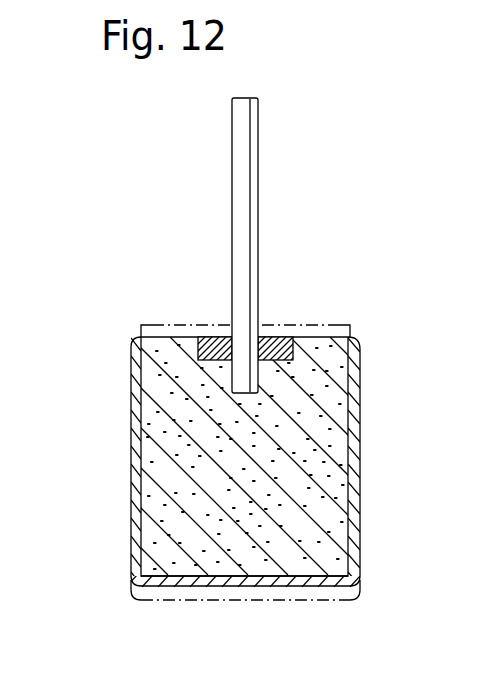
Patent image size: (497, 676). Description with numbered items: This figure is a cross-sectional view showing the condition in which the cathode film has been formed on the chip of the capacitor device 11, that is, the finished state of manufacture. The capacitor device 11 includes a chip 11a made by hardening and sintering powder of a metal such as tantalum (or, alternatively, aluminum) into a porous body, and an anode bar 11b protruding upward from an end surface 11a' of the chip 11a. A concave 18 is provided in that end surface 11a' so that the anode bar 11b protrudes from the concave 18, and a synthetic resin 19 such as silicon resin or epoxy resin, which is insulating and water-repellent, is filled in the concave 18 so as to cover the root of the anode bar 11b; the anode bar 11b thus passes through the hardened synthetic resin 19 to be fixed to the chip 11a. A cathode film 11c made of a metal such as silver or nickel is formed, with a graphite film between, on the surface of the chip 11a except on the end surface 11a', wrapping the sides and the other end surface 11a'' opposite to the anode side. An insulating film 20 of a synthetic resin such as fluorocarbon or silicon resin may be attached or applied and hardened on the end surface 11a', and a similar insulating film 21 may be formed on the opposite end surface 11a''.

The capacitor device 11 is at (248, 377).
The chip 11a is at (248, 456).
The end surface 11a' is at (281, 288).
The other end surface 11a'' is at (278, 616).
The anode bar 11b is at (248, 152).
The cathode film 11c is at (131, 440).
The concave 18 is at (212, 336).
The synthetic resin 19 is at (276, 336).
The insulating film 20 is at (158, 324).
The insulating film 21 is at (218, 600).